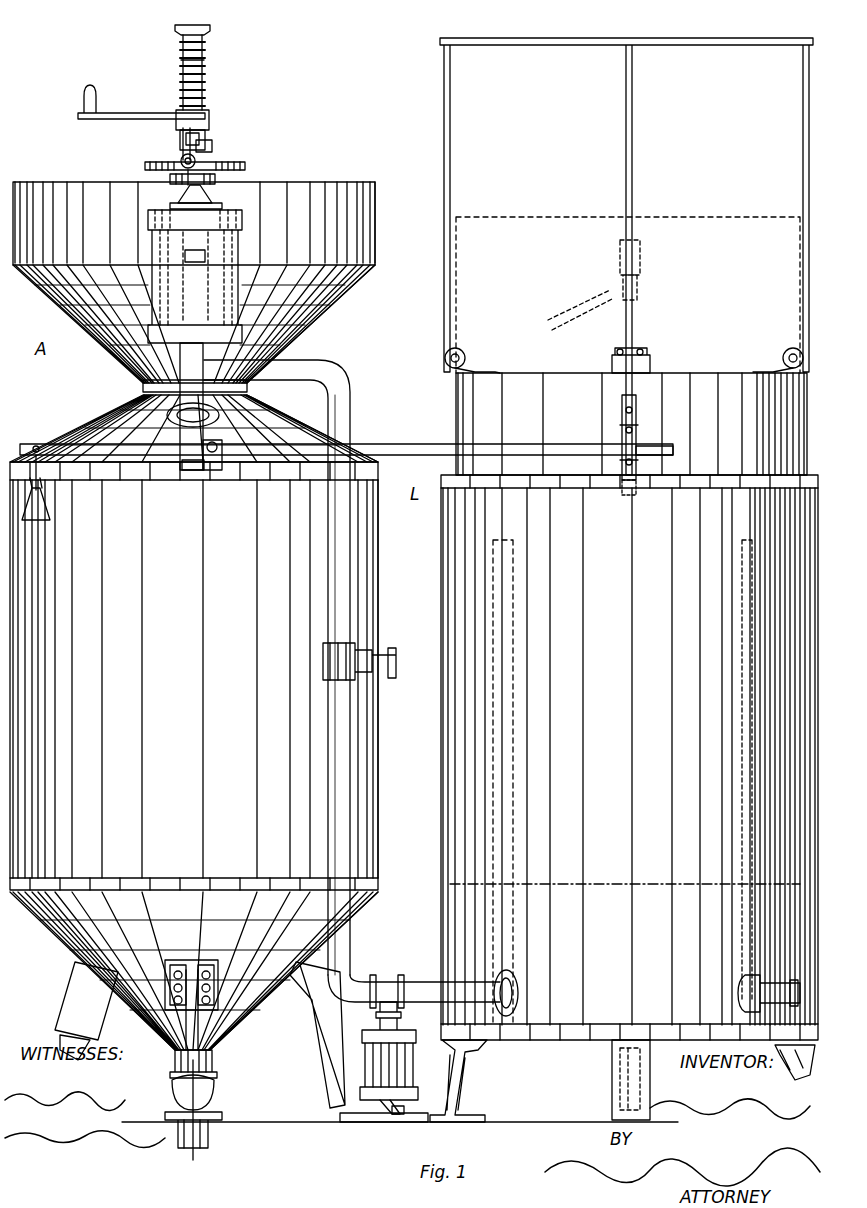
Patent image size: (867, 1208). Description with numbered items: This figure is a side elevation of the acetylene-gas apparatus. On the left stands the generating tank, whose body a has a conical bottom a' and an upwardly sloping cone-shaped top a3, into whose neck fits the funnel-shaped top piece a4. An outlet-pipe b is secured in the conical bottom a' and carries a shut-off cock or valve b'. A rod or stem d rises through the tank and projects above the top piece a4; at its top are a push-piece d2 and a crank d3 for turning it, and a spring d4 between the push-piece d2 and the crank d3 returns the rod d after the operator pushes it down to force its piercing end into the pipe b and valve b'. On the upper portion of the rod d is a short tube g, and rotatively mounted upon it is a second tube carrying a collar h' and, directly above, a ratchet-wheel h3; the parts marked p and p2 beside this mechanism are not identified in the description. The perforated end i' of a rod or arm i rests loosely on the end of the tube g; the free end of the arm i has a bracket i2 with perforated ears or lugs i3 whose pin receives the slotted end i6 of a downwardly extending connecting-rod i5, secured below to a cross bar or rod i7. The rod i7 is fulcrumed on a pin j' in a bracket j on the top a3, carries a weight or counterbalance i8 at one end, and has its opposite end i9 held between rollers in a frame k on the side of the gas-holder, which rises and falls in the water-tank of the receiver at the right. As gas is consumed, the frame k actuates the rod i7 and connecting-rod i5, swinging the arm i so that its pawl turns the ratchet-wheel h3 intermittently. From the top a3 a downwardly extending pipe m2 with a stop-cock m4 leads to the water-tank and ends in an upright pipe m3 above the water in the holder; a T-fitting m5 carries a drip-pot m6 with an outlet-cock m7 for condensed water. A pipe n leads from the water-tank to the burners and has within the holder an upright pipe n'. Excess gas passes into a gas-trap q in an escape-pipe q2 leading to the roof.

The push-piece d2 is at (205, 33).
The rod or stem d is at (203, 72).
The spring d4 is at (181, 62).
The crank d3 is at (115, 113).
The short tube or pipe g is at (198, 140).
The pawl p2 is at (199, 139).
The pawl carrier p is at (212, 148).
The slotted end i6 is at (183, 145).
The ratchet-wheel h3 is at (222, 162).
The cross bar or rod i7 is at (178, 158).
The collar h' is at (374, 318).
The perforated ears or lugs i3 is at (215, 180).
The connecting-rod i5 is at (185, 190).
The escape-pipe q2 is at (208, 198).
The gas-trap q is at (210, 285).
The funnel-shaped top piece a4 is at (345, 300).
The cone-shaped top a3 is at (105, 410).
The pin j' is at (202, 406).
The bracket j is at (214, 482).
The weight or counterbalance i8 is at (50, 505).
The body a is at (194, 676).
The conical bottom a' is at (194, 971).
The outlet-pipe b is at (206, 1064).
The shut-off cock or valve b' is at (206, 1110).
The downwardly-extending pipe m2 is at (312, 380).
The stop-cock m4 is at (322, 660).
The T-fitting m5 is at (392, 982).
The drip-pot m6 is at (415, 1080).
The outlet-cock m7 is at (398, 1118).
The bracket i2 is at (450, 162).
The perforated end i' is at (631, 424).
The frame k is at (636, 418).
The end of cross rod i9 is at (660, 446).
The rod or arm i is at (629, 757).
The upright pipe m3 is at (513, 702).
The upright pipe n' is at (733, 770).
The pipe n is at (752, 993).